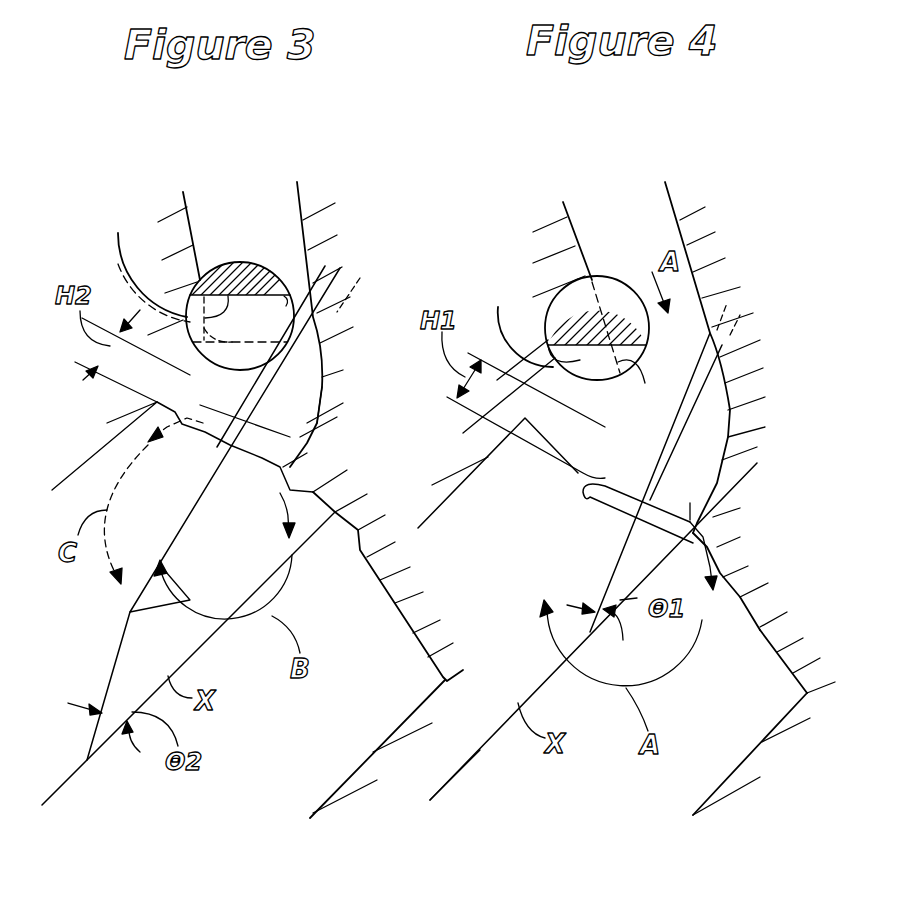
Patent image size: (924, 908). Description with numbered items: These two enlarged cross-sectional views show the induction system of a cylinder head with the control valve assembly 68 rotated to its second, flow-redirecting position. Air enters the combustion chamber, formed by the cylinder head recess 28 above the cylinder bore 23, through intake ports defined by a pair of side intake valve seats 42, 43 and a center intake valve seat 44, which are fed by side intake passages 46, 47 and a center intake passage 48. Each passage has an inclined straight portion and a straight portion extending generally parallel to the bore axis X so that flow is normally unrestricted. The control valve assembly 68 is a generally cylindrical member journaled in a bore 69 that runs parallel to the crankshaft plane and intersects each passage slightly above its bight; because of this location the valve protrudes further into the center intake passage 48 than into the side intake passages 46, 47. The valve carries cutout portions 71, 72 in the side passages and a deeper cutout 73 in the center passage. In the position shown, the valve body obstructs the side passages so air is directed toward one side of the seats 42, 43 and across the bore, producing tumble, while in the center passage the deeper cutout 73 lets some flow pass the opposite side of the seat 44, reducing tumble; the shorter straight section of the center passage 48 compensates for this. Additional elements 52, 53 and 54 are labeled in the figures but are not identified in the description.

In FIG. 3, the cylinder bore 23 is at (340, 780).
In FIG. 4, the cylinder bore 23 is at (718, 786).
In FIG. 3, the cylinder head recess 28 is at (322, 556).
In FIG. 4, the cylinder head recess 28 is at (727, 664).
In FIG. 4, the side intake valve seat 42 is at (567, 504).
In FIG. 4, the side intake valve seat 43 is at (672, 549).
In FIG. 3, the center intake valve seat 44 is at (260, 481).
In FIG. 4, the side intake passage 46 is at (733, 328).
In FIG. 4, the side intake passage 47 is at (654, 198).
In FIG. 3, the center intake passage 48 is at (258, 206).
In FIG. 4, the hatched wall 52 is at (786, 475).
In FIG. 4, the hatched wall portion 53 is at (700, 423).
In FIG. 3, the wall surface 54 is at (287, 395).
In FIG. 3, the control valve assembly 68 is at (230, 262).
In FIG. 4, the control valve assembly 68 is at (612, 274).
In FIG. 3, the bore 69 is at (328, 265).
In FIG. 4, the bore 69 is at (656, 482).
In FIG. 4, the cutout portion 71 is at (526, 340).
In FIG. 4, the cutout portion 72 is at (498, 306).
In FIG. 3, the cutout 73 is at (118, 234).